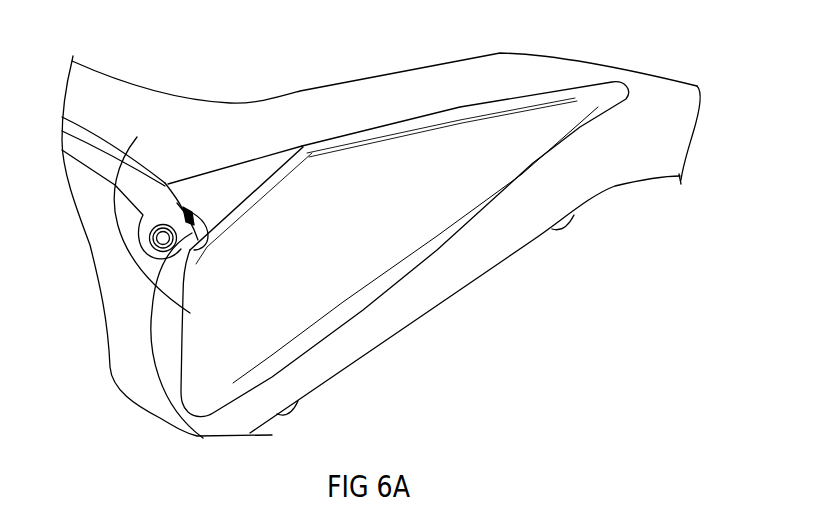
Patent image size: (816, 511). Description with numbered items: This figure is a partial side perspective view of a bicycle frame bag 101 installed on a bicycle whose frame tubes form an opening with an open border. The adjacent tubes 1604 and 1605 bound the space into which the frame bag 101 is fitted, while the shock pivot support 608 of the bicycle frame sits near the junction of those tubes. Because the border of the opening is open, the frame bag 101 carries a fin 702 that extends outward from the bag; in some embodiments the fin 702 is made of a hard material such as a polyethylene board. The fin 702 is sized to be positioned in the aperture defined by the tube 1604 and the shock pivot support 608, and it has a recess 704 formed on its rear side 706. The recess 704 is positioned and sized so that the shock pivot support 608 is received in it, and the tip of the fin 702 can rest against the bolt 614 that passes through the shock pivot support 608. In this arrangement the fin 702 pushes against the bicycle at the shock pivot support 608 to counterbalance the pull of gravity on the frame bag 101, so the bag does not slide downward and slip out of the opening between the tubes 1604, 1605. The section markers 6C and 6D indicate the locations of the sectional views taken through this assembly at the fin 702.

The bicycle frame bag 101 is at (448, 82).
The tube 1604 is at (290, 103).
The tube 1605 is at (443, 282).
The fin 702 is at (188, 185).
The recess 704 is at (213, 222).
The rear side 706 is at (215, 237).
The shock pivot support 608 is at (152, 213).
The bolt 614 is at (192, 244).
The section line 6C is at (137, 137).
The section line 6D is at (192, 233).